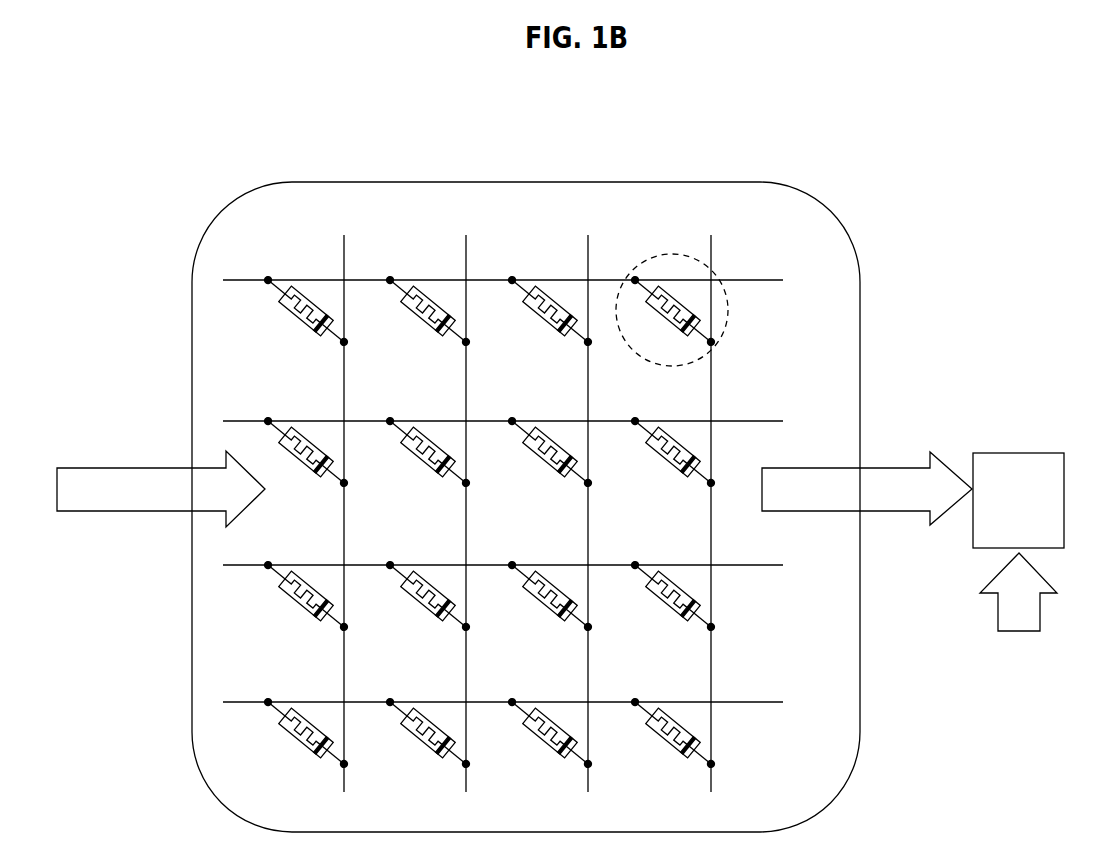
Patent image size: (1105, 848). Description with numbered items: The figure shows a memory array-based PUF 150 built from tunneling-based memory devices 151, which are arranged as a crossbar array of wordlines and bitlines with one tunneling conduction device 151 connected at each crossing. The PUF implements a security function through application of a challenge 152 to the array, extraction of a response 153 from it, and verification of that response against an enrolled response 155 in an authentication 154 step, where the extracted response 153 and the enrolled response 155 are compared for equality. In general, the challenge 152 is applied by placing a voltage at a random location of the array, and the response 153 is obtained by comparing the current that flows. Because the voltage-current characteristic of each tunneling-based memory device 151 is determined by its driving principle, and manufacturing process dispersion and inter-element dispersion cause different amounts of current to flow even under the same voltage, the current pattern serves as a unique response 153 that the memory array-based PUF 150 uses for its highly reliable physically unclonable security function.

The memory array-based PUF 150 is at (526, 507).
The tunneling-based memory device 151 is at (698, 262).
The challenge 152 is at (161, 489).
The response 153 is at (867, 488).
The authentication 154 is at (1020, 466).
The enrolled response 155 is at (1013, 640).